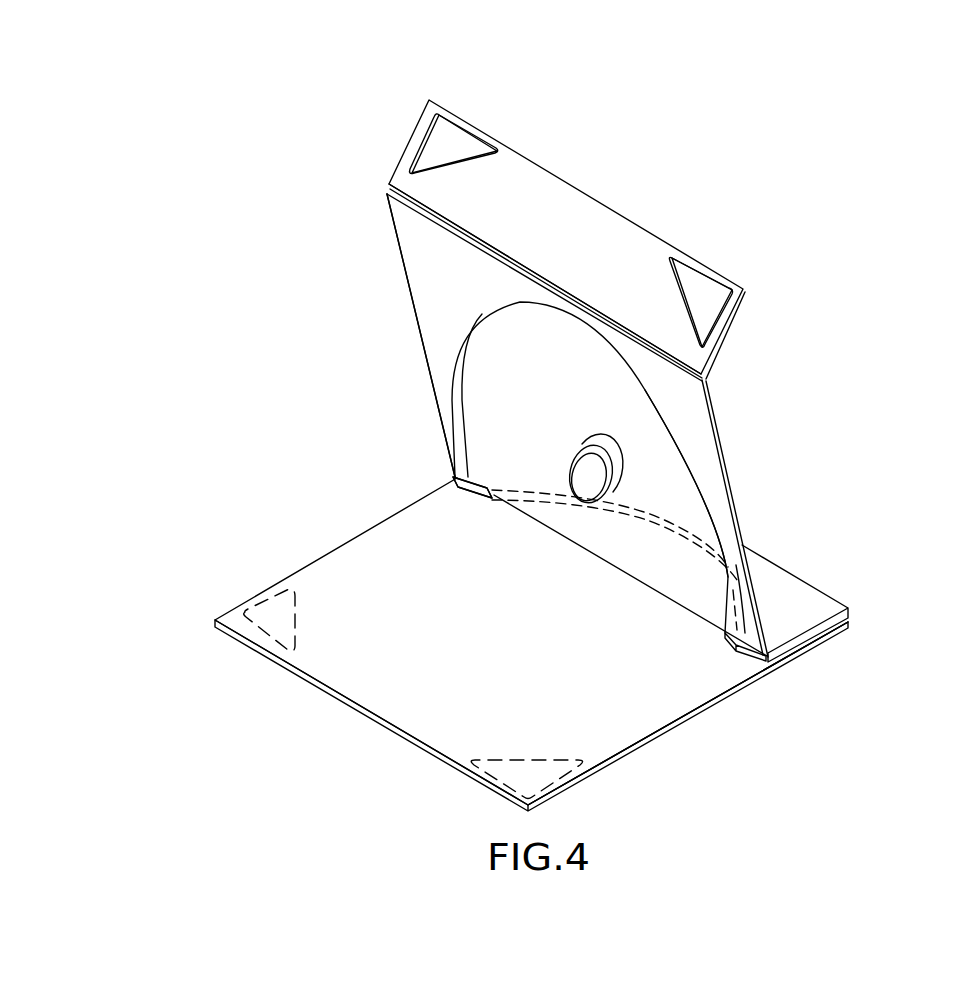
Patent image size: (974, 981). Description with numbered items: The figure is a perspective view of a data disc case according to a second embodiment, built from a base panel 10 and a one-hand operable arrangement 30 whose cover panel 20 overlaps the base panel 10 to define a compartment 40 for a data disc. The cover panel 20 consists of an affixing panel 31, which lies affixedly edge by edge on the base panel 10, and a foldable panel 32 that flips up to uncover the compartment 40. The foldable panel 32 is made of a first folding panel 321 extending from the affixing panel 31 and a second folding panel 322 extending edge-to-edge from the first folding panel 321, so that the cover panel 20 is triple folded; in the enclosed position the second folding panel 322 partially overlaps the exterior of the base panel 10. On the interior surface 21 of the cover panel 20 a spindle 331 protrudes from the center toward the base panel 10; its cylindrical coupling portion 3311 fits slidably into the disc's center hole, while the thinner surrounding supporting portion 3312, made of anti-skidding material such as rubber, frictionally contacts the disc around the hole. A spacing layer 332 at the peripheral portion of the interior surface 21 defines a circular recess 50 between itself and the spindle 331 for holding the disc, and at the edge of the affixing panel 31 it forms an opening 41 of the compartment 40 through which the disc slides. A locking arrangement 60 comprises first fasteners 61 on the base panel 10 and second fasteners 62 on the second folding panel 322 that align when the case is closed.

The base panel 10 is at (617, 713).
The cover panel 20 is at (564, 354).
The interior surface 21 is at (690, 517).
The one-hand operable arrangement 30 is at (222, 198).
The affixing panel 31 is at (795, 607).
The foldable panel 32 is at (318, 193).
The compartment 40 is at (536, 712).
The opening 41 is at (679, 615).
The recess 50 is at (653, 430).
The locking arrangement 60 is at (653, 186).
The first fastener 61 is at (262, 628).
The second fastener 62 is at (452, 143).
The first folding panel 321 is at (432, 282).
The second folding panel 322 is at (452, 203).
The spindle 331 is at (258, 459).
The spacing layer 332 is at (468, 298).
The coupling portion 3311 is at (578, 475).
The supporting portion 3312 is at (457, 481).